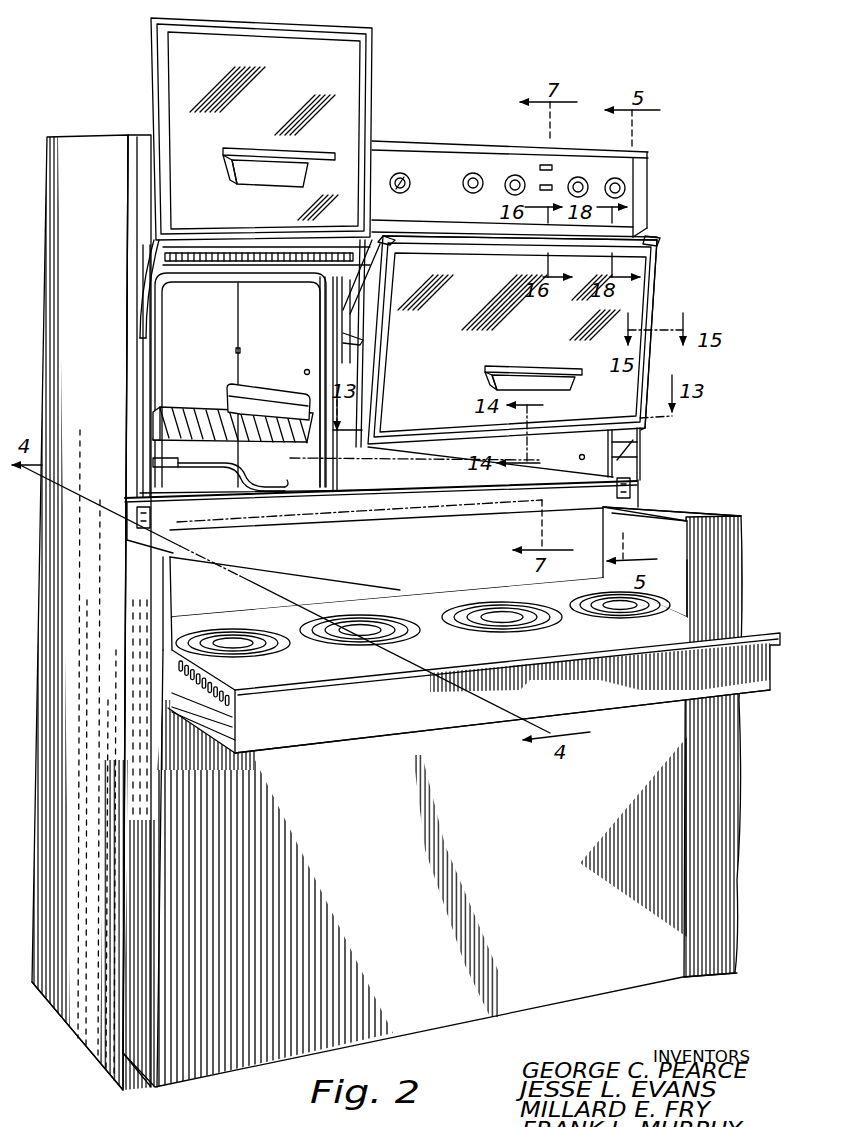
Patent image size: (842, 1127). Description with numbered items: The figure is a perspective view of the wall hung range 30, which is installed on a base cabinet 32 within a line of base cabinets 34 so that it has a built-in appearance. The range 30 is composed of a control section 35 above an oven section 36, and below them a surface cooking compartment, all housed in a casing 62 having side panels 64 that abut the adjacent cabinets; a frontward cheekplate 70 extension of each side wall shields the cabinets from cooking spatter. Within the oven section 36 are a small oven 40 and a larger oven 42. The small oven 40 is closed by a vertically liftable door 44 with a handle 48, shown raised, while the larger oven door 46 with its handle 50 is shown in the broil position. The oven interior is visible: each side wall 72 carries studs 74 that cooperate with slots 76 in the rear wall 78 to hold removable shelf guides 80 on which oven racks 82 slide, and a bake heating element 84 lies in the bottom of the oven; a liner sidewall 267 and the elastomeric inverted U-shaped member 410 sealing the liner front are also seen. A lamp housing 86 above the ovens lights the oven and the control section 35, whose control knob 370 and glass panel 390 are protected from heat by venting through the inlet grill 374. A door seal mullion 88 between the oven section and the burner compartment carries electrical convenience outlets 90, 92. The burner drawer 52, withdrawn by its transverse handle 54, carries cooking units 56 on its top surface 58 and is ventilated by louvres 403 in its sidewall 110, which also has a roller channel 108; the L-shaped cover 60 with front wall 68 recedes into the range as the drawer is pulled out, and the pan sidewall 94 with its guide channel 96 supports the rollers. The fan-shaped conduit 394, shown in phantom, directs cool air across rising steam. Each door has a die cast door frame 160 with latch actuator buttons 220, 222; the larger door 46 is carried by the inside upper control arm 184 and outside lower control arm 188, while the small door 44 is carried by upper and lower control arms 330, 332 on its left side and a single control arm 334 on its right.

The range 30 is at (655, 160).
The base cabinet 32 is at (677, 817).
The base cabinets 34 is at (727, 541).
The control section 35 is at (618, 173).
The oven section 36 is at (637, 308).
The small oven 40 is at (165, 367).
The larger oven 42 is at (545, 453).
The vertically liftable door 44 is at (352, 70).
The larger oven door 46 is at (660, 282).
The handle 48 is at (255, 155).
The handle 50 is at (531, 366).
The drawer 52 is at (330, 742).
The handle 54 is at (590, 658).
The cooking units 56 is at (278, 655).
The top surface 58 is at (452, 652).
The cover member 60 is at (190, 575).
The casing 62 is at (65, 135).
The side panels 64 is at (52, 292).
The front wall 68 is at (236, 592).
The cheekplate 70 is at (690, 566).
The side wall 72 is at (293, 455).
The studs 74 is at (307, 369).
The slots 76 is at (240, 348).
The rear wall 78 is at (186, 321).
The shelf guides 80 is at (253, 400).
The oven racks 82 is at (198, 405).
The bake heating element 84 is at (124, 502).
The lamp housing 86 is at (633, 222).
The door seal mullion 88 is at (163, 520).
The electrical convenience outlet 90 is at (140, 528).
The electrical convenience outlet 92 is at (630, 492).
The sidewall 94 is at (680, 583).
The guide channel 96 is at (723, 514).
The channel 108 is at (217, 713).
The sidewall 110 is at (222, 737).
The door frame 160 is at (662, 241).
The inside upper control arm 184 is at (355, 342).
The outside lower control arm 188 is at (645, 437).
The latch actuator button 220 is at (660, 235).
The latch actuator button 222 is at (405, 178).
The sidewall 267 is at (641, 451).
The upper control arm 330 is at (150, 264).
The lower control arm 332 is at (140, 327).
The control arm 334 is at (390, 237).
The control knob 370 is at (516, 175).
The inlet grill 374 is at (206, 258).
The glass panel 390 is at (387, 160).
The fan-shaped conduit 394 is at (421, 513).
The louvres 403 is at (197, 690).
The inverted U-shaped member 410 is at (352, 452).